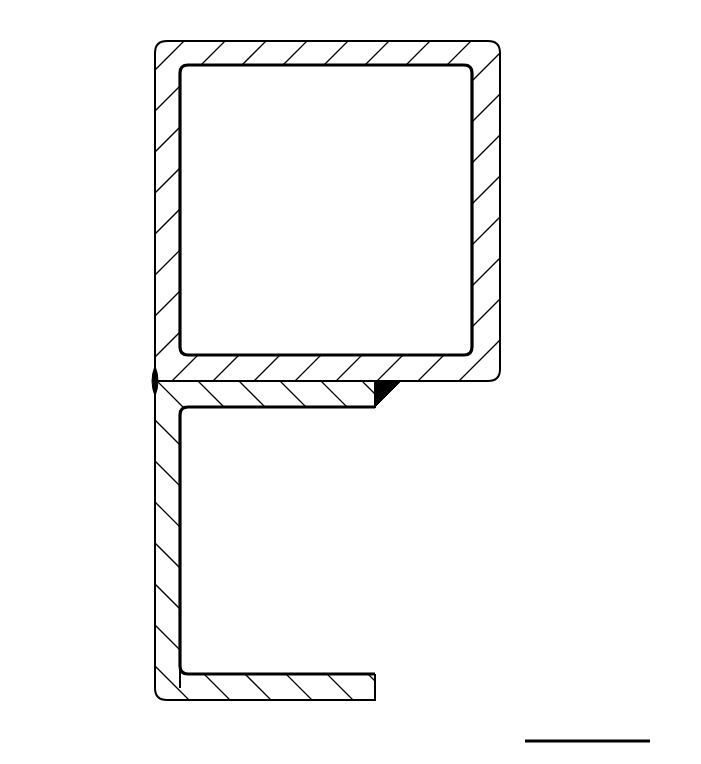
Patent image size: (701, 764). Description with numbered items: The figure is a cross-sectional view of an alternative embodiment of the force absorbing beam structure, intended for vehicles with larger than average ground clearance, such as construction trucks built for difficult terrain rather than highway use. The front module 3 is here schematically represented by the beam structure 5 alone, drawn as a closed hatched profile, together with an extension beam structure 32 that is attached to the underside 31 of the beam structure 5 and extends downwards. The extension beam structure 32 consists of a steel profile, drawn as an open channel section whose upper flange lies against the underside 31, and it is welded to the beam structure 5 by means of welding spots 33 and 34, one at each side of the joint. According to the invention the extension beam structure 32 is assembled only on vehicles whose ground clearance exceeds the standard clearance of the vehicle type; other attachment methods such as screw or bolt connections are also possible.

The front module 3 is at (228, 32).
The beam structure 5 is at (485, 222).
The underside 31 is at (447, 383).
The extension beam structure 32 is at (208, 700).
The welding spot 33 is at (152, 383).
The welding spot 34 is at (392, 395).